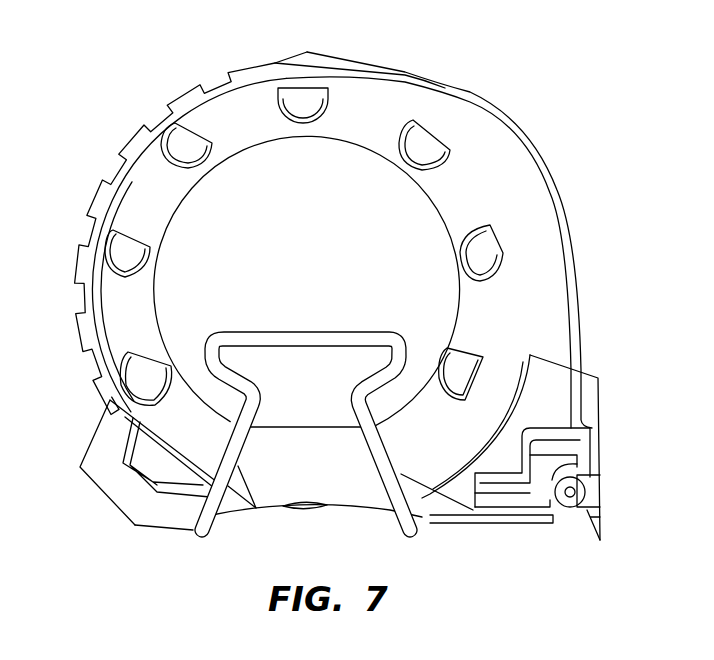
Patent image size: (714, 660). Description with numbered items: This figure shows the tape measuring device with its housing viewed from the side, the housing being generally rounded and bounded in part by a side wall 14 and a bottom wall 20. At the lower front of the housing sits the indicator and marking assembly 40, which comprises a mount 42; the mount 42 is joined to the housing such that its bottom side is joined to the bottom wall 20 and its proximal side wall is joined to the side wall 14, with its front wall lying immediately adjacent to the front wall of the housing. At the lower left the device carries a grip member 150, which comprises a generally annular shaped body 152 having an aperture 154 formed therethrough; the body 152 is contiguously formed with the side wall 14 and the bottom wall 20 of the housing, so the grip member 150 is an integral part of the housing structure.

The side wall 14 is at (352, 138).
The bottom wall 20 is at (354, 512).
The indicator and marking assembly 40 is at (599, 358).
The mount 42 is at (620, 394).
The grip member 150 is at (100, 512).
The body 152 is at (98, 446).
The aperture 154 is at (158, 468).